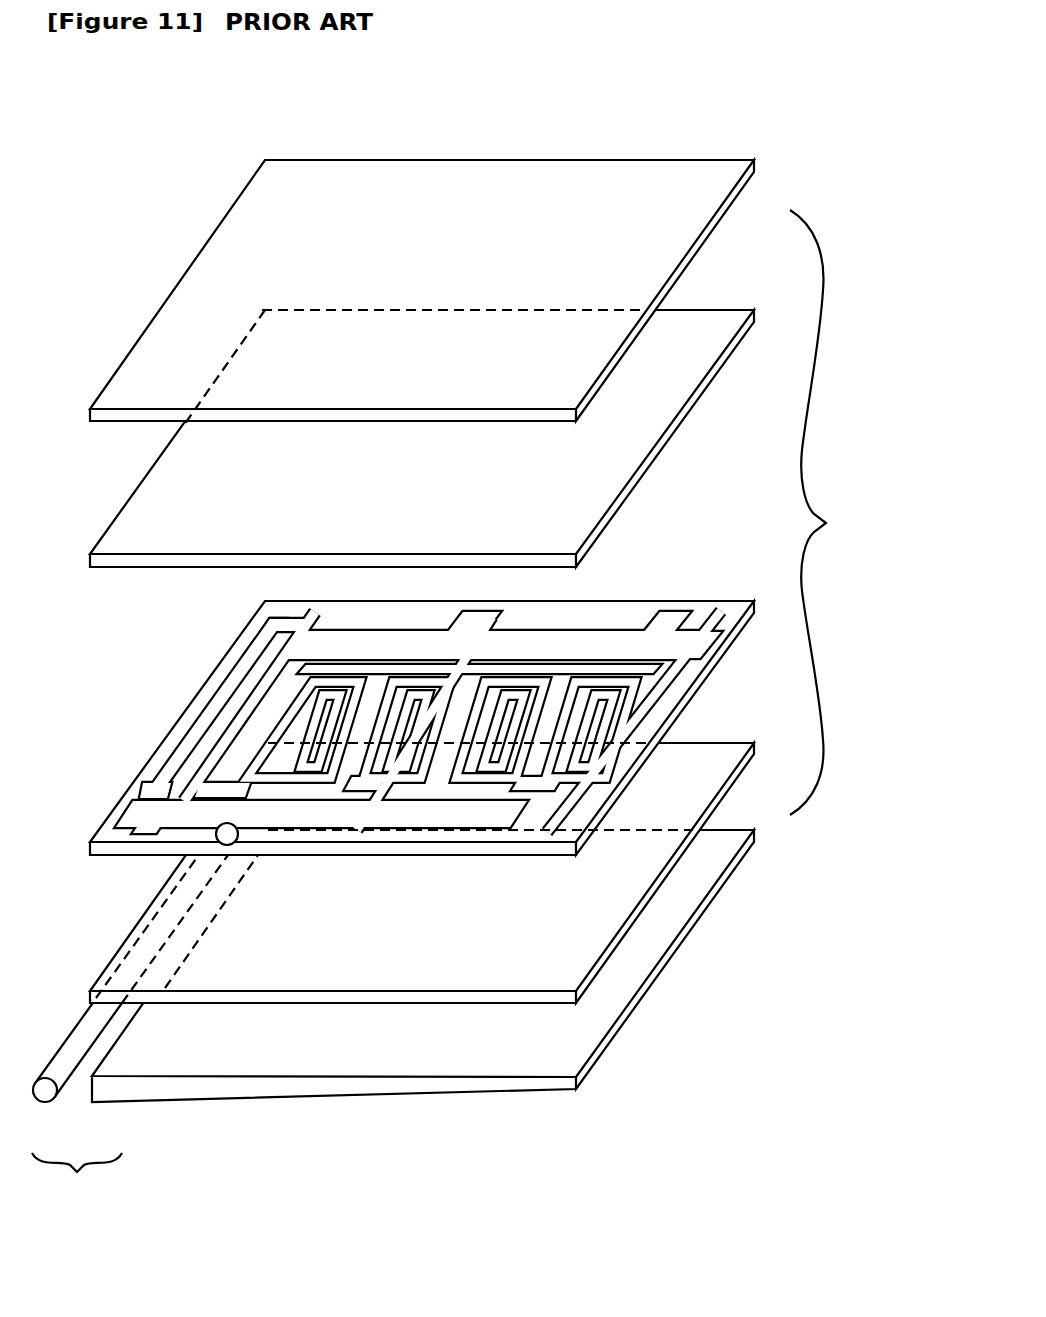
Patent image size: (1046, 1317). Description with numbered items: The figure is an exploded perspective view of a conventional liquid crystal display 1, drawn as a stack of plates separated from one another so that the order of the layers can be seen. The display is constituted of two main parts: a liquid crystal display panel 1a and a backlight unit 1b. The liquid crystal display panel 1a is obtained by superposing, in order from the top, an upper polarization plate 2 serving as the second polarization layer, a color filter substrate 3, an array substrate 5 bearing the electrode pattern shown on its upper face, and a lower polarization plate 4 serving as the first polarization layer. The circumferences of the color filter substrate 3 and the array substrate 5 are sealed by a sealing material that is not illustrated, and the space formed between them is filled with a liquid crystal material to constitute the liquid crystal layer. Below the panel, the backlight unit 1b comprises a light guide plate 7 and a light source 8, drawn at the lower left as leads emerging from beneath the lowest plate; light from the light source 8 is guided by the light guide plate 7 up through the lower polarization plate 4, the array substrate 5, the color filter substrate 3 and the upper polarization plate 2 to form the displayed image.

The liquid crystal display 1 is at (405, 1111).
The liquid crystal display panel 1a is at (825, 512).
The backlight unit 1b is at (77, 1179).
The upper polarization plate 2 is at (724, 207).
The color filter substrate 3 is at (724, 356).
The lower polarization plate 4 is at (727, 788).
The array substrate 5 is at (727, 645).
The light guide plate 7 is at (108, 1093).
The light source 8 is at (44, 1102).